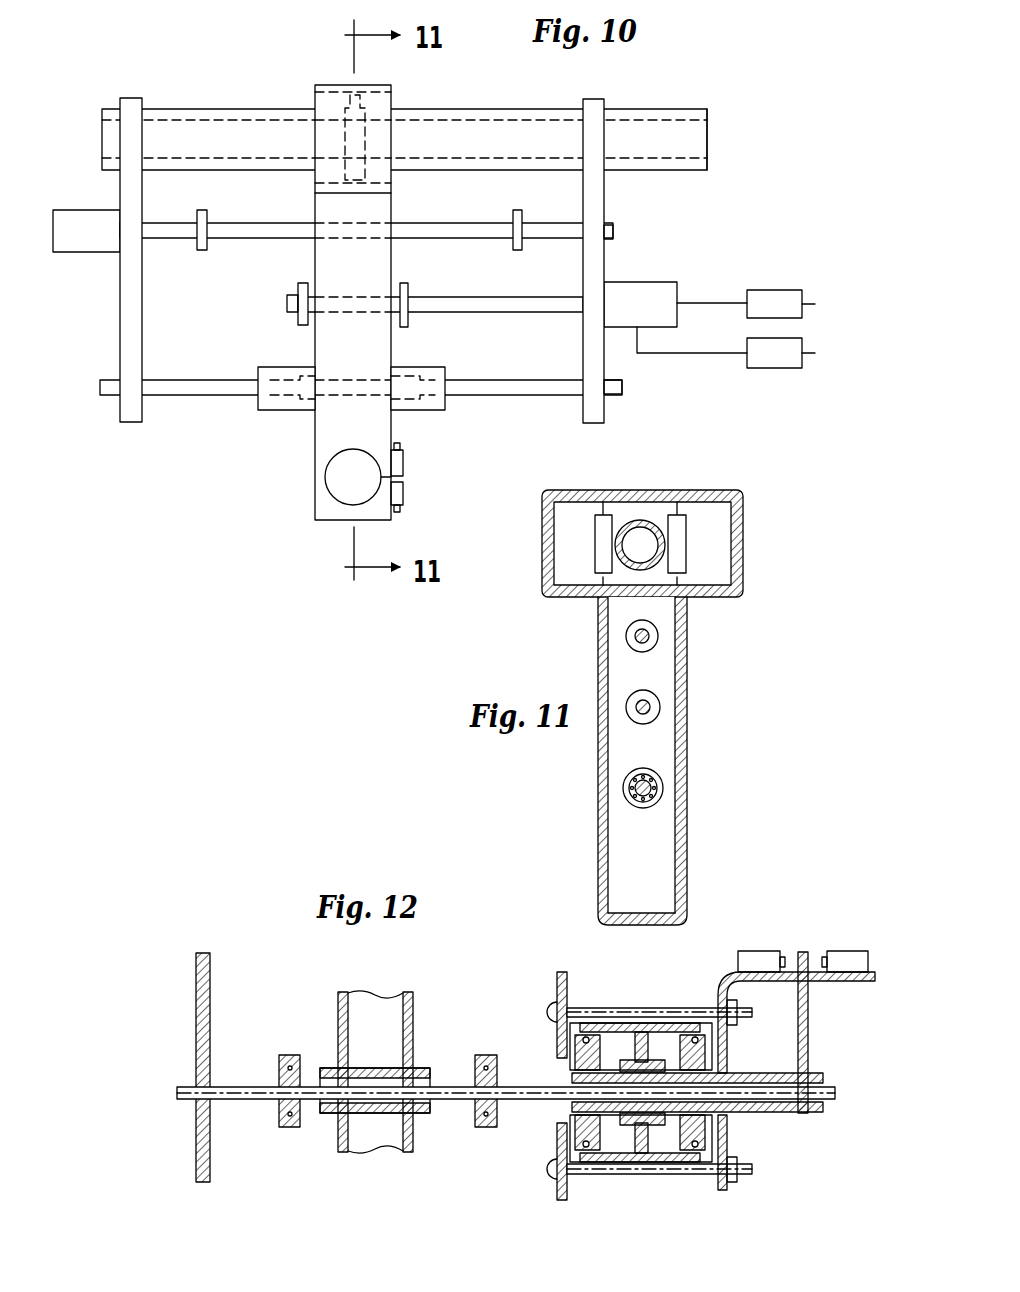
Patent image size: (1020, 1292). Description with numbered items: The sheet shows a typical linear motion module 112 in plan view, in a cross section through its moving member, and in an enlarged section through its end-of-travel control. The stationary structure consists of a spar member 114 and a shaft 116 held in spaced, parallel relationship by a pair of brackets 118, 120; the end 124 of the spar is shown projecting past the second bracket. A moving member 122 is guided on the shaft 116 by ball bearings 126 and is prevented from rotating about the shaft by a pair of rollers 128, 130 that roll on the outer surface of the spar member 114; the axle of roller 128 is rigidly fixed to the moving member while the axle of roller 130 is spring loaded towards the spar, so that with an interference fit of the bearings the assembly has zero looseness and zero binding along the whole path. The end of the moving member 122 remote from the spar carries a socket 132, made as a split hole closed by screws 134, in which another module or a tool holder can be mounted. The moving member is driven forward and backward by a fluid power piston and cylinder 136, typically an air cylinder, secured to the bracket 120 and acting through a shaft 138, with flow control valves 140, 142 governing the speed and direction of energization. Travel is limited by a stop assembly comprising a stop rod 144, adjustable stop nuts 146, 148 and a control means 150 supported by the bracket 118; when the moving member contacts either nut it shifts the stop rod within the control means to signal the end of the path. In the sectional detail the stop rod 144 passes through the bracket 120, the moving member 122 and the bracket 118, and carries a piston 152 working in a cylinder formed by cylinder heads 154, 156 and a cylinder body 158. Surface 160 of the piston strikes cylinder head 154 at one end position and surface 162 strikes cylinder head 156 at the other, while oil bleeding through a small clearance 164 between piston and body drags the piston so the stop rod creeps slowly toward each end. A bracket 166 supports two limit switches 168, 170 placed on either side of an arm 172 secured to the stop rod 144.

In FIG. 10, the linear motion module 112 is at (232, 71).
In FIG. 11, the linear motion module 112 is at (817, 613).
In FIG. 10, the spar member 114 is at (660, 109).
In FIG. 11, the spar member 114 is at (657, 523).
In FIG. 10, the shaft 116 is at (203, 396).
In FIG. 11, the shaft 116 is at (632, 801).
In FIG. 10, the bracket 118 is at (118, 322).
In FIG. 12, the bracket 118 is at (557, 1000).
In FIG. 10, the bracket 120 is at (594, 424).
In FIG. 12, the bracket 120 is at (196, 995).
In FIG. 10, the moving member 122 is at (314, 452).
In FIG. 11, the moving member 122 is at (597, 745).
In FIG. 12, the moving member 122 is at (413, 1020).
In FIG. 10, the tube end 124 is at (707, 115).
In FIG. 10, the ball bearings 126 is at (275, 370).
In FIG. 11, the ball bearings 126 is at (657, 785).
In FIG. 11, the roller 128 is at (687, 538).
In FIG. 10, the roller 130 is at (362, 135).
In FIG. 11, the roller 130 is at (596, 545).
In FIG. 10, the socket 132 is at (327, 488).
In FIG. 10, the screws 134 is at (404, 495).
In FIG. 10, the fluid power piston and cylinder 136 is at (662, 282).
In FIG. 10, the shaft 138 is at (495, 312).
In FIG. 11, the shaft 138 is at (657, 707).
In FIG. 10, the flow control valve 140 is at (787, 290).
In FIG. 10, the flow control valve 142 is at (782, 368).
In FIG. 10, the stop rod 144 is at (277, 222).
In FIG. 11, the stop rod 144 is at (656, 636).
In FIG. 12, the stop rod 144 is at (246, 1102).
In FIG. 10, the adjustable stop nut 146 is at (203, 252).
In FIG. 12, the adjustable stop nut 146 is at (488, 1128).
In FIG. 10, the adjustable stop nut 148 is at (513, 247).
In FIG. 12, the adjustable stop nut 148 is at (283, 1055).
In FIG. 10, the control means 150 is at (68, 209).
In FIG. 12, the control means 150 is at (735, 1141).
In FIG. 12, the piston 152 is at (648, 1152).
In FIG. 12, the cylinder head 154 is at (604, 1145).
In FIG. 12, the cylinder head 156 is at (713, 1145).
In FIG. 12, the cylinder body 158 is at (602, 1160).
In FIG. 12, the surface 160 is at (600, 1040).
In FIG. 12, the surface 162 is at (683, 1035).
In FIG. 12, the clearance 164 is at (643, 1030).
In FIG. 12, the bracket 166 is at (729, 985).
In FIG. 12, the limit switch 168 is at (763, 950).
In FIG. 12, the limit switch 170 is at (848, 950).
In FIG. 12, the arm 172 is at (810, 1030).